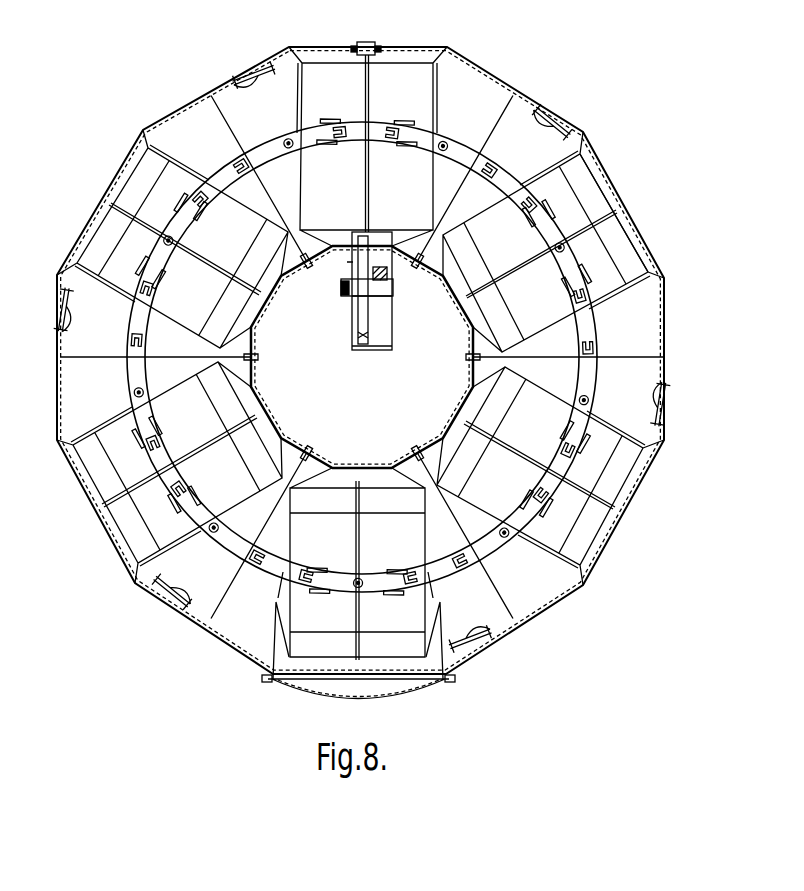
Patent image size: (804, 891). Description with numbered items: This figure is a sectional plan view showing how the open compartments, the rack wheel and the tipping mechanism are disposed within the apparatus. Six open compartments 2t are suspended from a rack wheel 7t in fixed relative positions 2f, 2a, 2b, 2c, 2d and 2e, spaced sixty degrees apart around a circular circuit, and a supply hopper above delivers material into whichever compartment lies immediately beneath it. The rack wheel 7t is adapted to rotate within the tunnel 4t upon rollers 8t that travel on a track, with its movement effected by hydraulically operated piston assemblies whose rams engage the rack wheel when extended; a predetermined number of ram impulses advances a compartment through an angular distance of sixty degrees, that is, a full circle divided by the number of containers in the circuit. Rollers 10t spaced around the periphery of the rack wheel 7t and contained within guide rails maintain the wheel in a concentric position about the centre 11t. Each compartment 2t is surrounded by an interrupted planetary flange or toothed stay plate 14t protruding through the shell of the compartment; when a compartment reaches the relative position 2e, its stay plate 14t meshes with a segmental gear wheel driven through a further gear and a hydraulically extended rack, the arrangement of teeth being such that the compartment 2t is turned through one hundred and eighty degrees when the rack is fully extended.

The tunnel 4t is at (482, 85).
The open compartment 2t is at (553, 180).
The relative position of compartment 2a is at (635, 422).
The relative position of compartment 2b is at (471, 607).
The relative position of compartment 2c is at (100, 392).
The relative position of compartment 2d is at (208, 160).
The relative position of compartment 2e is at (460, 195).
The relative position of compartment 2f is at (634, 342).
The rack wheel 7t is at (363, 128).
The rollers 8t is at (322, 130).
The rollers 10t is at (285, 133).
The centre 11t is at (361, 358).
The toothed stay plate 14t is at (365, 201).